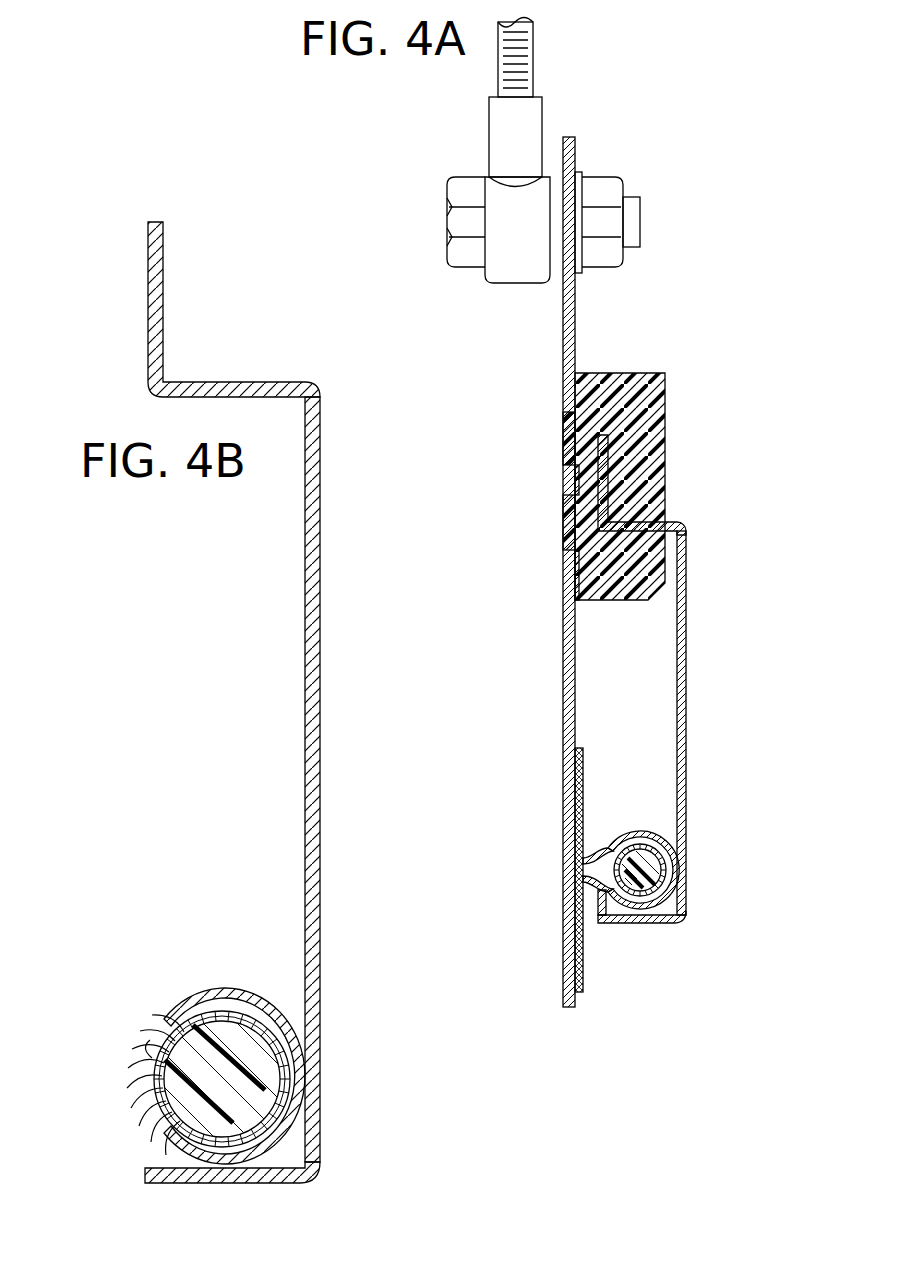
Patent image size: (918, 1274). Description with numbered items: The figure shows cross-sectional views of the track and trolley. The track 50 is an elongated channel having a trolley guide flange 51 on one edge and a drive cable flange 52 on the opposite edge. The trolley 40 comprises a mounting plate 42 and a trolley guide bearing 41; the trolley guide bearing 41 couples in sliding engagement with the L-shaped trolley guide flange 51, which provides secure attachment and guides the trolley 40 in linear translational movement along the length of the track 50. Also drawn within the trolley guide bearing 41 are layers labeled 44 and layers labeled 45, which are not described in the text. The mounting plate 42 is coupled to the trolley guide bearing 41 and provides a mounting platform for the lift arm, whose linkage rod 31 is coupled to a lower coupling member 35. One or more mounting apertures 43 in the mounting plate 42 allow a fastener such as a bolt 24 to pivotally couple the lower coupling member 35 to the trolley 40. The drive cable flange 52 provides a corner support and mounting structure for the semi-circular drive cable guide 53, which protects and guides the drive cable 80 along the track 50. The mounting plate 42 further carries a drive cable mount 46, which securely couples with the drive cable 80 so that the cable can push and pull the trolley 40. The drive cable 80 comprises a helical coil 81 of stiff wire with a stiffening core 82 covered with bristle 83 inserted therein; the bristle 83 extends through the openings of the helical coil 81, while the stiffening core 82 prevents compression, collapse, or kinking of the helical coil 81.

In FIG. 4A, the linkage rod 31 is at (533, 52).
In FIG. 4A, the lower coupling member 35 is at (508, 207).
In FIG. 4A, the bolt 24 is at (456, 248).
In FIG. 4A, the mounting aperture 43 is at (587, 250).
In FIG. 4A, the trolley 40 is at (712, 354).
In FIG. 4A, the trolley guide bearing 41 is at (647, 417).
In FIG. 4A, the mounting plate 42 is at (565, 668).
In FIG. 4A, the magnetic layer 44 is at (565, 437).
In FIG. 4A, the adhesive layer 45 is at (565, 452).
In FIG. 4A, the drive cable mount 46 is at (602, 918).
In FIG. 4A, the track 50 is at (686, 692).
In FIG. 4B, the track 50 is at (320, 782).
In FIG. 4A, the trolley guide flange 51 is at (642, 508).
In FIG. 4B, the trolley guide flange 51 is at (228, 382).
In FIG. 4A, the drive cable flange 52 is at (637, 924).
In FIG. 4B, the drive cable flange 52 is at (217, 1185).
In FIG. 4A, the drive cable guide 53 is at (658, 832).
In FIG. 4B, the drive cable guide 53 is at (262, 1007).
In FIG. 4A, the drive cable 80 is at (650, 877).
In FIG. 4B, the drive cable 80 is at (162, 1045).
In FIG. 4B, the helical coil 81 is at (145, 1097).
In FIG. 4B, the stiffening core 82 is at (267, 1103).
In FIG. 4B, the bristle 83 is at (128, 1043).